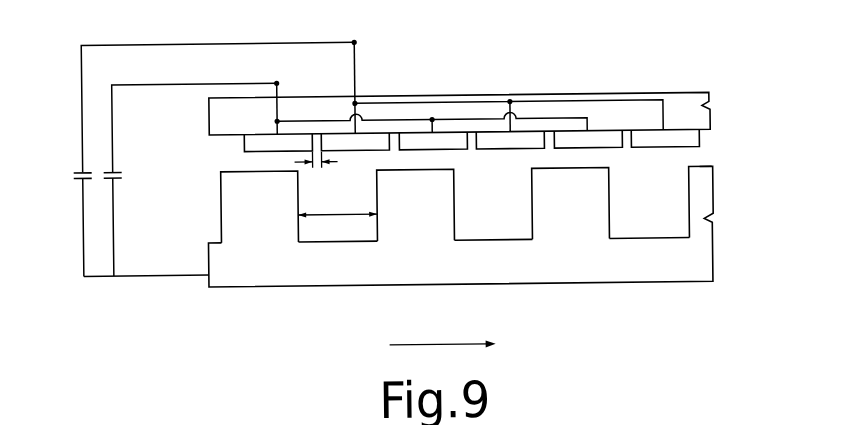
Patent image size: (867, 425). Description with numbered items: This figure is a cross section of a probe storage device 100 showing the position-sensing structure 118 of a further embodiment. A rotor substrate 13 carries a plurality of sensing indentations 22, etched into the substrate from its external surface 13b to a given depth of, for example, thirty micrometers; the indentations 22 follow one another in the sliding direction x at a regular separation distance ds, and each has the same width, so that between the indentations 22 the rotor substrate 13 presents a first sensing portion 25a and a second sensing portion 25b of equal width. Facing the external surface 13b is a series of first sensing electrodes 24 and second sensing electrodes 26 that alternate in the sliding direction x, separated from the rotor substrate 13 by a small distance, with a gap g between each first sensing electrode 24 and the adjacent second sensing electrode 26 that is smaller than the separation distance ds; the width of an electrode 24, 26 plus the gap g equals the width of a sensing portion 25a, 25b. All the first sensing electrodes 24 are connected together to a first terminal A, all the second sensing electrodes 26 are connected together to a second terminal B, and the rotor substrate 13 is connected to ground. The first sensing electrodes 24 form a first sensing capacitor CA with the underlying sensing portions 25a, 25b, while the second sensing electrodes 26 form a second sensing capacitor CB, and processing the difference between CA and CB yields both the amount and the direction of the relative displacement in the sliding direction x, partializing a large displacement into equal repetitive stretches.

The sensor assembly 100 is at (731, 134).
The position-sensing structure 118 is at (212, 155).
The first sensing electrode 24 is at (280, 144).
The second sensing electrode 26 is at (380, 145).
The rotor substrate 13 is at (698, 264).
The external surface 13b is at (707, 165).
The first sensing portion 25a is at (260, 222).
The second sensing portion 25b is at (428, 224).
The sensing indentation 22 is at (369, 234).
The first terminal A is at (278, 84).
The second terminal B is at (356, 44).
The first sensing capacitor CA is at (121, 178).
The second sensing capacitor CB is at (80, 178).
The gap g is at (322, 162).
The separation distance ds is at (337, 205).
The sliding direction x is at (443, 354).